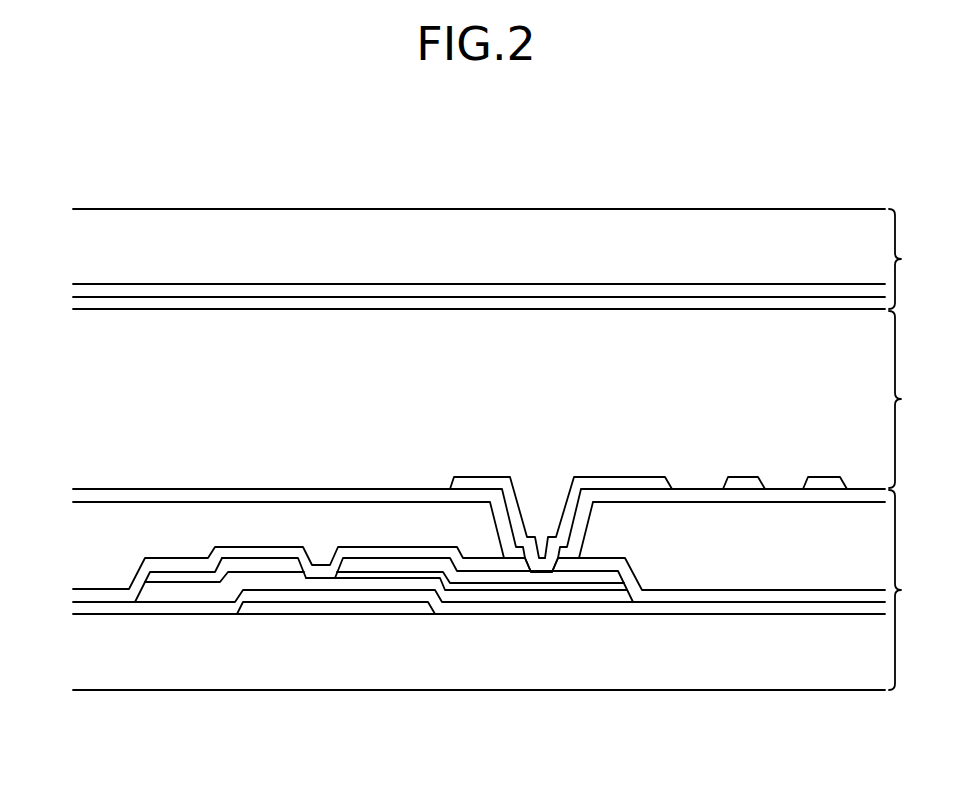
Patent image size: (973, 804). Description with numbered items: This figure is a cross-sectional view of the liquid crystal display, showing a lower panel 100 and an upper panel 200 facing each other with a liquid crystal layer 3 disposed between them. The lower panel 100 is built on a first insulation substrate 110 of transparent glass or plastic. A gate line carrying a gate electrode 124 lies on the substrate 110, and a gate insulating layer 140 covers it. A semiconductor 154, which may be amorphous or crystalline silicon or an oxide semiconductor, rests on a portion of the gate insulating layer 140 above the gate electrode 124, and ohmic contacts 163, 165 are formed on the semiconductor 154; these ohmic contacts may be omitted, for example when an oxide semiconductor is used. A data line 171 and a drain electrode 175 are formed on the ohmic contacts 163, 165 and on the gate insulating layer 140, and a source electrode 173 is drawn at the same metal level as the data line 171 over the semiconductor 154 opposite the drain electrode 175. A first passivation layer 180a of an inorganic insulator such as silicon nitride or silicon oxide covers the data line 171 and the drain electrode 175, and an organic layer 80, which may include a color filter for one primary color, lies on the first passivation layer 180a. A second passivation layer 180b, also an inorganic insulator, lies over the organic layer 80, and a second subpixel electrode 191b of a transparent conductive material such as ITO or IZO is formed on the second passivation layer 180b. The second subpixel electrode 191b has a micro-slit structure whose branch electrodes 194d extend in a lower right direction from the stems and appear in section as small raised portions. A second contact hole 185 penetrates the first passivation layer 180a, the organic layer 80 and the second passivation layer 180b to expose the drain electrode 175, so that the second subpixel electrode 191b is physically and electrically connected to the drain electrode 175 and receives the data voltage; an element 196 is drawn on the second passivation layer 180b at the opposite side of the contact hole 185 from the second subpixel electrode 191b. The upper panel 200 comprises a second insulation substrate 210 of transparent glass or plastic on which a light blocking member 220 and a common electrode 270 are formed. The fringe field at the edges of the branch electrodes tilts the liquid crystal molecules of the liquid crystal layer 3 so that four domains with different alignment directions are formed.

The upper panel 200 is at (914, 259).
The second insulation substrate 210 is at (317, 232).
The light blocking member 220 is at (445, 291).
The common electrode 270 is at (575, 305).
The liquid crystal layer 3 is at (905, 399).
The lower panel 100 is at (914, 590).
The first insulation substrate 110 is at (452, 665).
The gate electrode 124 is at (337, 607).
The gate insulating layer 140 is at (650, 607).
The semiconductor 154 is at (375, 583).
The ohmic contact 163 is at (193, 587).
The ohmic contact 165 is at (513, 587).
The data line 171 is at (172, 575).
The source electrode 173 is at (267, 565).
The drain electrode 175 is at (568, 577).
The first passivation layer 180a is at (782, 597).
The second passivation layer 180b is at (823, 497).
The organic layer 80 is at (102, 567).
The second contact hole 185 is at (532, 548).
The second subpixel electrode 191b is at (620, 482).
The branch electrodes 194d is at (745, 482).
The connecting member 196 is at (465, 482).